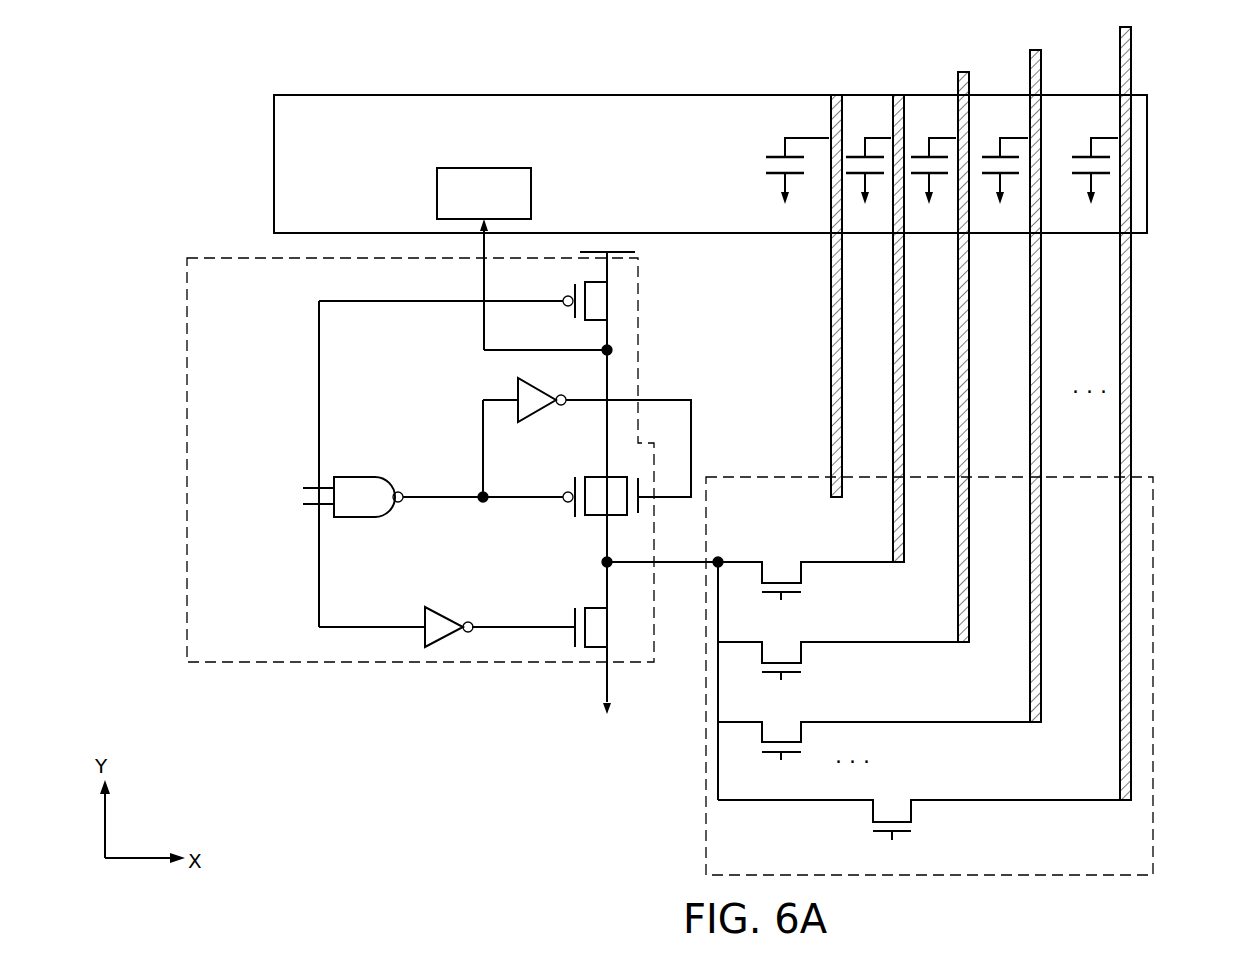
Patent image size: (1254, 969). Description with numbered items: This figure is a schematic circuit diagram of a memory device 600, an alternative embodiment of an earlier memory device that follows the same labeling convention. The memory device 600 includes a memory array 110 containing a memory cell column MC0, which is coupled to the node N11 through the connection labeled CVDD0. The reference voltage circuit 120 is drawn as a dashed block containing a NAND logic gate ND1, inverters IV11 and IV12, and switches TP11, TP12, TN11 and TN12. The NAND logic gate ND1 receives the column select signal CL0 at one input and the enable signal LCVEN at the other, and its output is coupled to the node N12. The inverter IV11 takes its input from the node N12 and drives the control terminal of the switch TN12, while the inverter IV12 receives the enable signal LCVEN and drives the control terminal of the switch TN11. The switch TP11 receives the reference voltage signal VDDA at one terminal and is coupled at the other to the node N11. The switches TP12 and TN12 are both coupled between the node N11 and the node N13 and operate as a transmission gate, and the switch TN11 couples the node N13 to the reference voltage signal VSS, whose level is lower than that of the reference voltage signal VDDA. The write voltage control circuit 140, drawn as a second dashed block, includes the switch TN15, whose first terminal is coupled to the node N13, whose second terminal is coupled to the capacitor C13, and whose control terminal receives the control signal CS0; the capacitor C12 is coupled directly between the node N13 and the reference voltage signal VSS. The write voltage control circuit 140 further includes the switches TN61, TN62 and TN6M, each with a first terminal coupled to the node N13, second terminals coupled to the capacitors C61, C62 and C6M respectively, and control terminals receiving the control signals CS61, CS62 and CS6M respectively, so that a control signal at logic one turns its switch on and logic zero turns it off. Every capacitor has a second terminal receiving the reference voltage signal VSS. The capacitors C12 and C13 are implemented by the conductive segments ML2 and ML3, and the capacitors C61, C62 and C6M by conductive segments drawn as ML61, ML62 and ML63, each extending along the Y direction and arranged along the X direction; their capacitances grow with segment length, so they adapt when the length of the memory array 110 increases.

The memory device 600 is at (238, 55).
The memory array 110 is at (1148, 168).
The reference voltage circuit 120 is at (187, 389).
The write voltage control circuit 140 is at (1154, 619).
The memory cell column MC0 is at (507, 205).
The cell supply voltage line CVDD0 is at (482, 290).
The reference voltage signal VDDA is at (635, 250).
The reference voltage signal VSS is at (846, 479).
The switch TP11 is at (463, 292).
The switch TP12 is at (592, 518).
The switch TN11 is at (557, 627).
The switch TN12 is at (615, 477).
The switch TN15 is at (805, 568).
The switch TN61 is at (803, 656).
The switch TN62 is at (803, 736).
The switch TN6M is at (913, 815).
The inverter IV11 is at (515, 392).
The inverter IV12 is at (434, 650).
The NAND logic gate ND1 is at (380, 519).
The node N11 is at (604, 354).
The node N12 is at (479, 492).
The node N13 is at (639, 564).
The column select signal CL0 is at (291, 486).
The enable signal LCVEN is at (269, 511).
The control signal CS0 is at (779, 616).
The control signal CS61 is at (780, 696).
The control signal CS62 is at (780, 776).
The control signal CS6M is at (887, 854).
The capacitor C12 is at (774, 155).
The capacitor C13 is at (855, 155).
The capacitor C61 is at (919, 155).
The capacitor C62 is at (991, 155).
The capacitor C6M is at (1083, 155).
The conductive segment ML2 is at (831, 292).
The conductive segment ML3 is at (893, 320).
The conductive segment ML61 is at (958, 354).
The conductive segment ML62 is at (1041, 321).
The conductive segment ML63 is at (1131, 298).